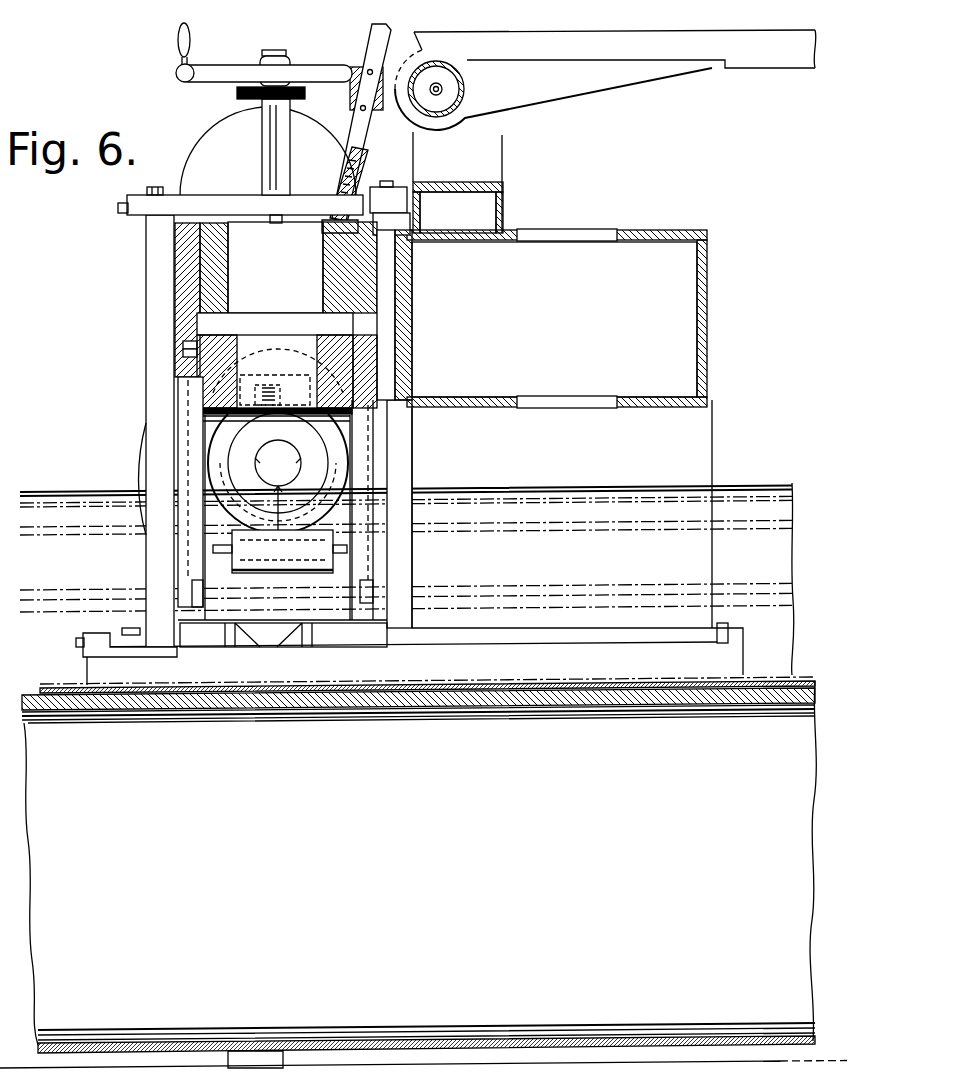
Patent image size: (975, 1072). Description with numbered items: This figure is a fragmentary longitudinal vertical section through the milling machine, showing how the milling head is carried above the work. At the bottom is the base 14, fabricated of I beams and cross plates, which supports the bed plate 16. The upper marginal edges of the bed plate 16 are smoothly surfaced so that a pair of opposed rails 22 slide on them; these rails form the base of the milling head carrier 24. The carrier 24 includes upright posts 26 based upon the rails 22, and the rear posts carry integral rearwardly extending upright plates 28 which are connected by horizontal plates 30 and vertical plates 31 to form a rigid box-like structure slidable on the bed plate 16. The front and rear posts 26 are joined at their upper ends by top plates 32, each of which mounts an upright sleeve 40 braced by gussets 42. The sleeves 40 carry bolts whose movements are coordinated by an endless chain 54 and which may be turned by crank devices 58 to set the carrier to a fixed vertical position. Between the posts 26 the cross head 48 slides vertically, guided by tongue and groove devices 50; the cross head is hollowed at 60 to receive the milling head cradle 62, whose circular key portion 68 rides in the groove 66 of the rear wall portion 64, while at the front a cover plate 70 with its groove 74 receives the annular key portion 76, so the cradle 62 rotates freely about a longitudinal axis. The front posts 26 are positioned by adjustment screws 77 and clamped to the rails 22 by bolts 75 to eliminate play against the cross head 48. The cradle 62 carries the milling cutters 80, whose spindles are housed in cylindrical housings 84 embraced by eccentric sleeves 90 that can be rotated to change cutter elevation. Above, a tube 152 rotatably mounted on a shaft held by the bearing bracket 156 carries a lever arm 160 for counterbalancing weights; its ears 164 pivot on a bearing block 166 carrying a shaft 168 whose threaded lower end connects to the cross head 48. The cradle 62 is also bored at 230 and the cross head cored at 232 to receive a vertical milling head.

The base 14 is at (423, 874).
The bed plate 16 is at (578, 700).
The rails 22 is at (427, 654).
The milling head carrier 24 is at (142, 409).
The upright posts 26 is at (160, 455).
The upright plates 28 is at (559, 429).
The horizontal plates 30 is at (557, 230).
The vertical plates 31 is at (710, 360).
The top plates 32 is at (233, 197).
The sleeve 40 is at (284, 150).
The gussets 42 is at (276, 178).
The cross head 48 is at (275, 264).
The tongue and groove devices 50 is at (413, 268).
The endless chain 54 is at (296, 56).
The crank devices 58 is at (235, 70).
The central hollow 60 is at (275, 311).
The milling head cradle 62 is at (275, 375).
The wall portion 64 is at (368, 358).
The circular groove 66 is at (365, 352).
The circular key portion 68 is at (365, 345).
The cover plate 70 is at (185, 285).
The circular groove 74 is at (190, 344).
The bolts 75 is at (148, 190).
The annular key portion 76 is at (190, 350).
The adjustment screws 77 is at (116, 208).
The milling cutters 80 is at (278, 473).
The cylindrical housings 84 is at (262, 488).
The eccentric sleeves 90 is at (297, 510).
The tube 152 is at (440, 62).
The bearing bracket 156 is at (490, 155).
The lever arm 160 is at (650, 40).
The ears 164 is at (402, 60).
The bearing block 166 is at (365, 185).
The shaft 168 is at (372, 28).
The bore 230 is at (278, 377).
The central core 232 is at (240, 252).